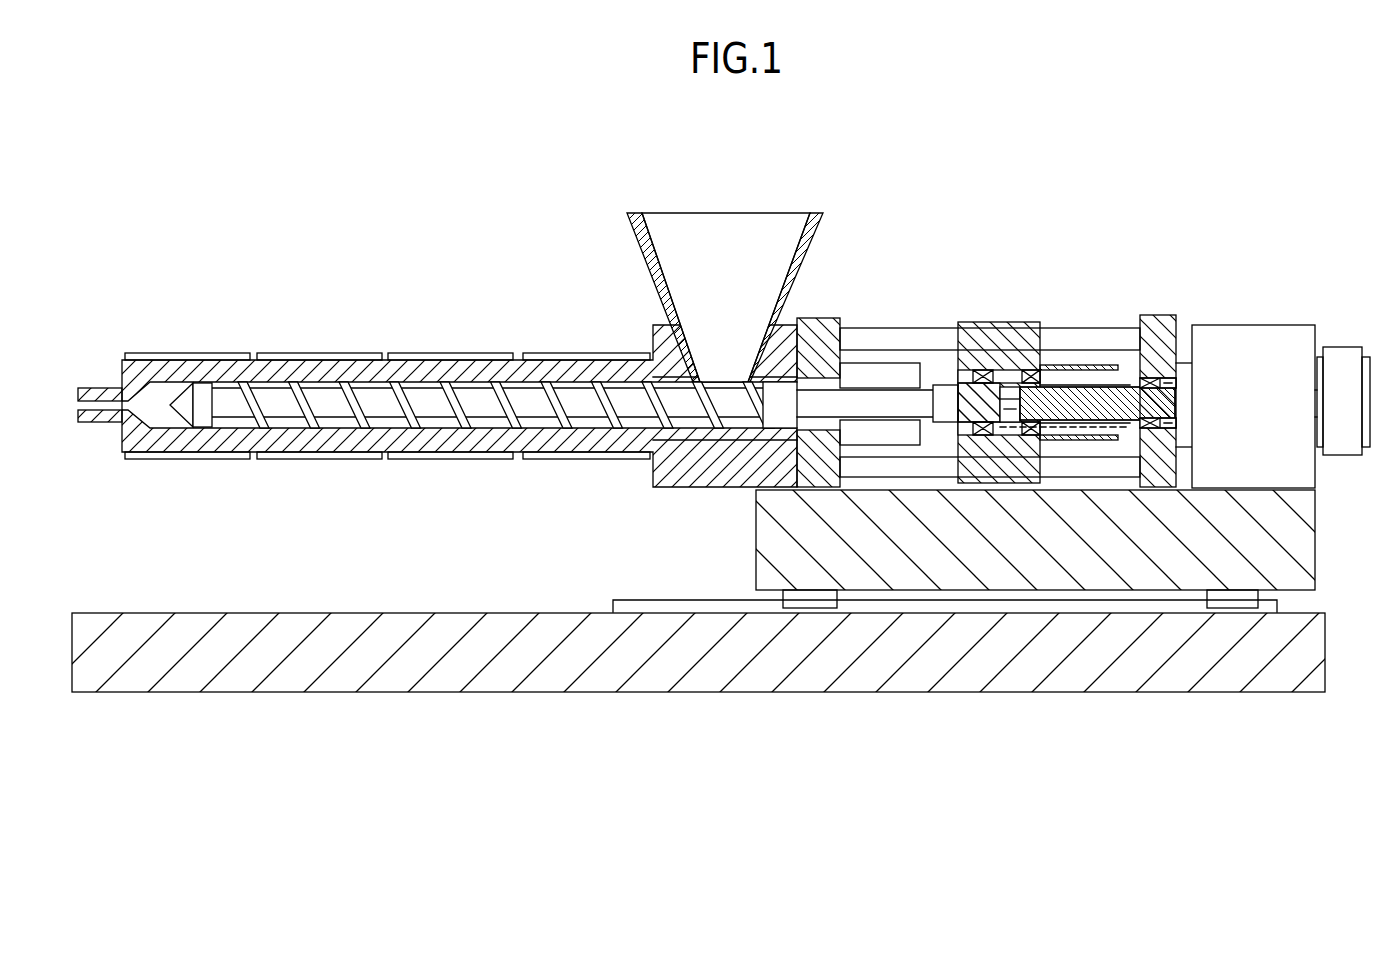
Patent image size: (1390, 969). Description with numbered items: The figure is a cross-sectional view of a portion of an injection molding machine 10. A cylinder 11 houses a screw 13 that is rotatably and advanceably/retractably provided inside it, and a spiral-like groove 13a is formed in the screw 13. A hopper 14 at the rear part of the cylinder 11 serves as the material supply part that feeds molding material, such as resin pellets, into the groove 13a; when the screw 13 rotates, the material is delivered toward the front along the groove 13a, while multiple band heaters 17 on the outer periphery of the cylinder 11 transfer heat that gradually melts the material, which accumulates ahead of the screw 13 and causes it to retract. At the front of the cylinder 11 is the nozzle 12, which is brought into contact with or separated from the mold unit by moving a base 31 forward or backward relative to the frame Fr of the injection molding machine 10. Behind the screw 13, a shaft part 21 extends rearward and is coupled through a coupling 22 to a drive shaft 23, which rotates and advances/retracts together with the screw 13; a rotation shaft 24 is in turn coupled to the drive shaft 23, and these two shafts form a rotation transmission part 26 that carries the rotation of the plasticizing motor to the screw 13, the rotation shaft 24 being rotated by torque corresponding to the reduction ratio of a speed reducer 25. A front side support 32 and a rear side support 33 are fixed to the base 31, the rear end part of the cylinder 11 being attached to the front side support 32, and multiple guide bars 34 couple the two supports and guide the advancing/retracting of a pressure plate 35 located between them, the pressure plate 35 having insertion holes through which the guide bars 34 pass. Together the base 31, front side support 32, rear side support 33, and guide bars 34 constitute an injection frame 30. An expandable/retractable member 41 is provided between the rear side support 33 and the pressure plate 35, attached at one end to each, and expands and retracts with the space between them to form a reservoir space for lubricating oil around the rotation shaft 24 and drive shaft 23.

The injection molding machine 10 is at (150, 178).
The cylinder 11 is at (316, 370).
The nozzle 12 is at (94, 388).
The screw 13 is at (483, 437).
The spiral-like groove 13a is at (385, 422).
The hopper 14 is at (724, 225).
The band heaters 17 is at (189, 353).
The shaft part 21 is at (855, 395).
The coupling 22 is at (940, 395).
The drive shaft 23 is at (993, 397).
The rotation shaft 24 is at (1062, 395).
The speed reducer 25 is at (1252, 327).
The rotation transmission part 26 is at (1066, 330).
The injection frame 30 is at (1333, 507).
The base 31 is at (1307, 545).
The front side support 32 is at (817, 318).
The rear side support 33 is at (1158, 318).
The guide bars 34 is at (886, 330).
The pressure plate 35 is at (986, 325).
The expandable/retractable member 41 is at (1088, 356).
The frame Fr is at (1327, 652).